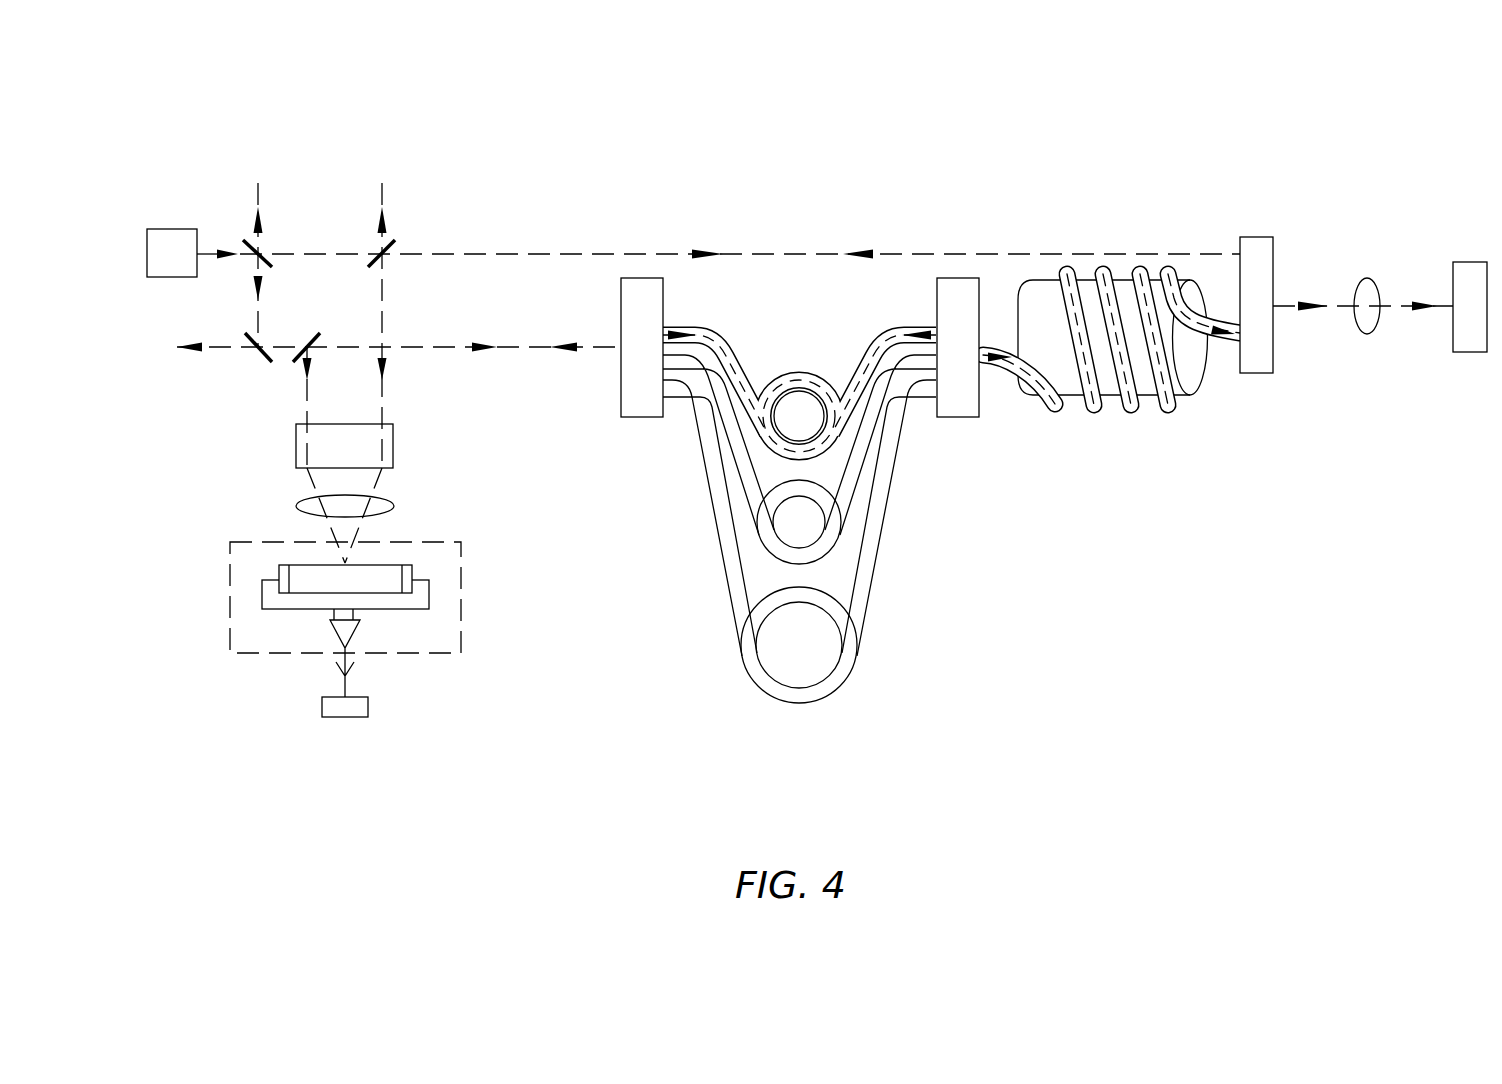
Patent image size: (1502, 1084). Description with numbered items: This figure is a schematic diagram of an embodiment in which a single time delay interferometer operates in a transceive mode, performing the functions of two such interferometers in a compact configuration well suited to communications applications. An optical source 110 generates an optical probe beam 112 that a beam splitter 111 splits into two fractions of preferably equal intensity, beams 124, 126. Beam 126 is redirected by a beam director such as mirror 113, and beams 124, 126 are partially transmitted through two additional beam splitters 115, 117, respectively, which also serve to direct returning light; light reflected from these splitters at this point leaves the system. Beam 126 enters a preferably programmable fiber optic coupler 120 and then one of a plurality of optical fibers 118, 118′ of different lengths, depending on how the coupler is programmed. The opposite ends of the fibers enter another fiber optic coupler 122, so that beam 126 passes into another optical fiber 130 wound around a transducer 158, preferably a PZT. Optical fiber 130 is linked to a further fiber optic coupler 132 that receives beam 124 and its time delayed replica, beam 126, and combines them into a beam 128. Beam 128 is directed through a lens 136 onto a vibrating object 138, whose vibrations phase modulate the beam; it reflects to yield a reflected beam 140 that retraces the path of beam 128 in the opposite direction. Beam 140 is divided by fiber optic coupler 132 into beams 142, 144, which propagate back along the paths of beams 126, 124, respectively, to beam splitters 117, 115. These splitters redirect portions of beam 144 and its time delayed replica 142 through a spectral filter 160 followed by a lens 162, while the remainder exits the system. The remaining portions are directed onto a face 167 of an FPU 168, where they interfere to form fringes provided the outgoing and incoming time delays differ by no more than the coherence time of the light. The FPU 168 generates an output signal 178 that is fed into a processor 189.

The optical source 110 is at (188, 229).
The beam splitter 111 is at (270, 256).
The optical probe beam 112 is at (217, 253).
The mirror 113 is at (245, 340).
The beam splitter 115 is at (390, 240).
The beam splitter 117 is at (308, 335).
The optical fiber 118 is at (748, 372).
The optical fiber 118′ is at (773, 562).
The fiber optic coupler 120 is at (640, 418).
The fiber optic coupler 122 is at (960, 418).
The beam 124 is at (705, 252).
The beam 126 is at (490, 343).
The beam 128 is at (1315, 303).
The optical fiber 130 is at (1088, 407).
The fiber optic coupler 132 is at (1250, 237).
The lens 136 is at (1360, 333).
The vibrating object 138 is at (1465, 352).
The reflected beam 140 is at (1418, 303).
The beam 142 is at (307, 378).
The beam 144 is at (382, 378).
The transducer 158 is at (1196, 395).
The spectral filter 160 is at (296, 448).
The lens 162 is at (297, 506).
The face 167 is at (396, 552).
The FPU 168 is at (232, 622).
The output signal 178 is at (345, 662).
The processor 189 is at (330, 717).